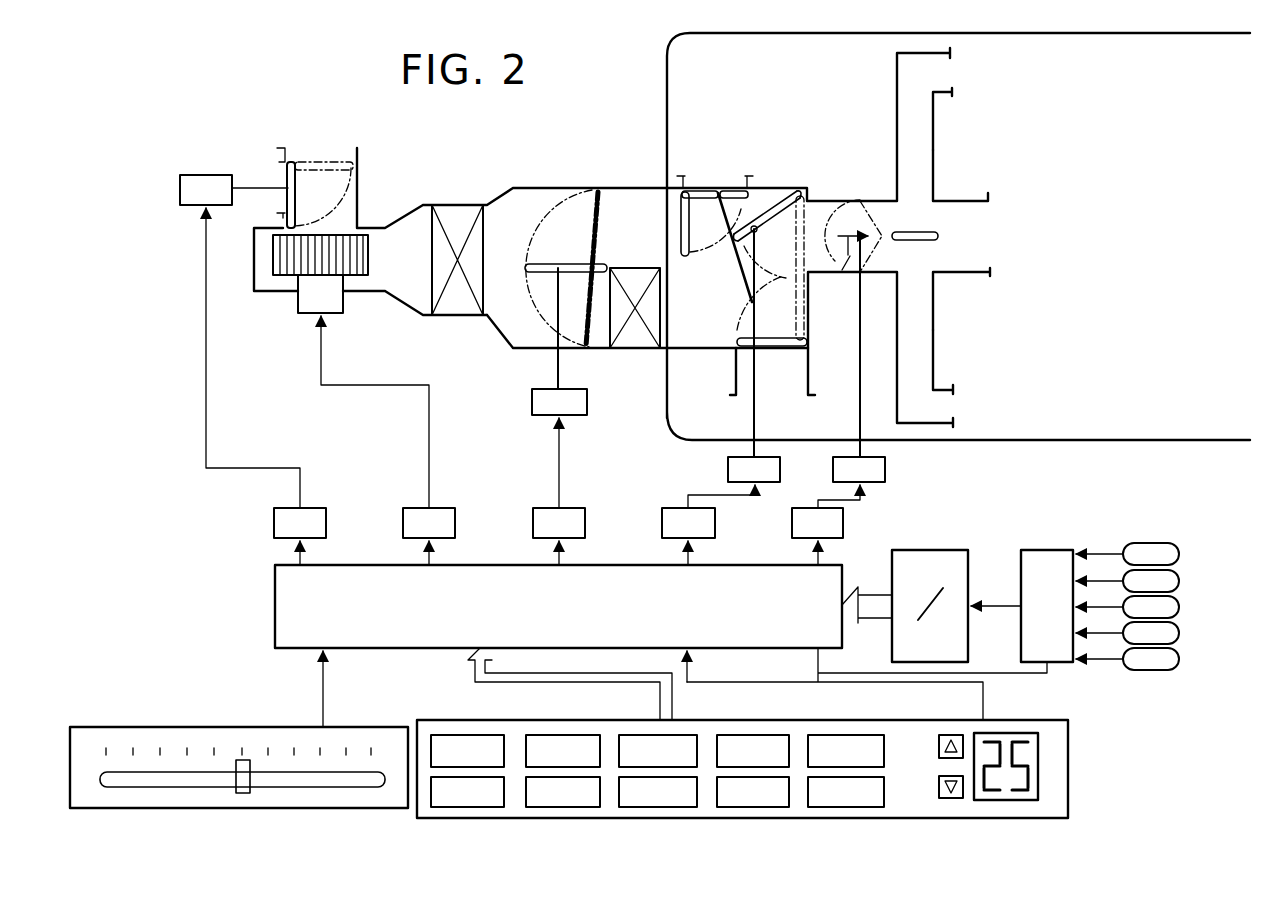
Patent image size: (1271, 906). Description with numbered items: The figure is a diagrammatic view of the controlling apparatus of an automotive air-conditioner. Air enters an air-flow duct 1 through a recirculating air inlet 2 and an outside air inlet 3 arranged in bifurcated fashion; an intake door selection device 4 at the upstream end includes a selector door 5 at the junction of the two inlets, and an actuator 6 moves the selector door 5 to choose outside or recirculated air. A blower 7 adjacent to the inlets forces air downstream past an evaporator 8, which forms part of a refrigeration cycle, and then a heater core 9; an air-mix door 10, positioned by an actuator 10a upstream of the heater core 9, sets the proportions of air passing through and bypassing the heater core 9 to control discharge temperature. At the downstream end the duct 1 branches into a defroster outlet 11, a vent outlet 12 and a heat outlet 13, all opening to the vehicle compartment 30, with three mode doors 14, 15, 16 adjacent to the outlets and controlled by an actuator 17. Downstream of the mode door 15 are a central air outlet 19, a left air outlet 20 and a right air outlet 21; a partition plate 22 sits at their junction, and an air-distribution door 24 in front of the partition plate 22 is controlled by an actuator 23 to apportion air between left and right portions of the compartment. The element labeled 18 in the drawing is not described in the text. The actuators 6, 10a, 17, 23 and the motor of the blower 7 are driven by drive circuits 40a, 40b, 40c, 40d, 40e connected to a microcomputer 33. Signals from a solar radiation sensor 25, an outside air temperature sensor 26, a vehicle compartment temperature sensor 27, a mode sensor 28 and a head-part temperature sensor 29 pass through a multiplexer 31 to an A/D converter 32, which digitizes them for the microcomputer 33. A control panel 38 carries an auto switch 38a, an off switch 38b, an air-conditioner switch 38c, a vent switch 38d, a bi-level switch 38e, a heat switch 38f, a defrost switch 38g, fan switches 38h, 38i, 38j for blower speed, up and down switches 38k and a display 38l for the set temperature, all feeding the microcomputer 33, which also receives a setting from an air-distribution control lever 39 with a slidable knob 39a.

The air-flow duct 1 is at (518, 187).
The recirculating air inlet 2 is at (292, 160).
The outside air inlet 3 is at (275, 172).
The intake door selection device 4 is at (333, 160).
The selector door 5 is at (282, 205).
The actuator 6 is at (206, 178).
The blower 7 is at (272, 260).
The evaporator 8 is at (457, 310).
The heater core 9 is at (637, 350).
The air-mix door 10 is at (572, 265).
The actuator 10a is at (531, 398).
The defroster outlet 11 is at (694, 185).
The vent outlet 12 is at (820, 205).
The heat outlet 13 is at (782, 388).
The mode door 14 is at (735, 190).
The mode door 15 is at (782, 190).
The mode door 16 is at (808, 341).
The actuator 17 is at (728, 470).
The defroster damper 18 is at (862, 203).
The central air outlet 19 is at (955, 203).
The left air outlet 20 is at (948, 392).
The right air outlet 21 is at (962, 92).
The partition wall or plate 22 is at (930, 242).
The actuator 23 is at (886, 468).
The air-distribution door 24 is at (852, 262).
The solar radiation sensor 25 is at (1179, 554).
The outside air temperature sensor 26 is at (1179, 581).
The vehicle compartment temperature sensor 27 is at (1179, 607).
The mode sensor 28 is at (1179, 633).
The head-part temperature sensor 29 is at (1179, 659).
The vehicle compartment 30 is at (1140, 424).
The multiplexer 31 is at (1049, 549).
The analog-to-digital (A/D) converter 32 is at (937, 549).
The microcomputer 33 is at (400, 648).
The control panel 38 is at (610, 806).
The auto switch 38a is at (460, 734).
The off switch 38b is at (442, 807).
The air-conditioner switch 38c is at (553, 734).
The vent switch 38d is at (690, 734).
The bi-level switch 38e is at (770, 734).
The heat switch 38f is at (857, 734).
The defrost switch 38g is at (558, 807).
The fan switch 38h is at (673, 807).
The fan switch 38i is at (755, 807).
The fan switch 38j is at (862, 807).
The up and down switches 38k is at (950, 734).
The indicator or display 38l is at (1007, 800).
The air-distribution control lever 39 is at (337, 808).
The slidable knob 39a is at (243, 793).
The drive circuit 40a is at (273, 521).
The drive circuit 40b is at (533, 521).
The drive circuit 40c is at (662, 521).
The drive circuit 40d is at (792, 521).
The drive circuit 40e is at (403, 521).